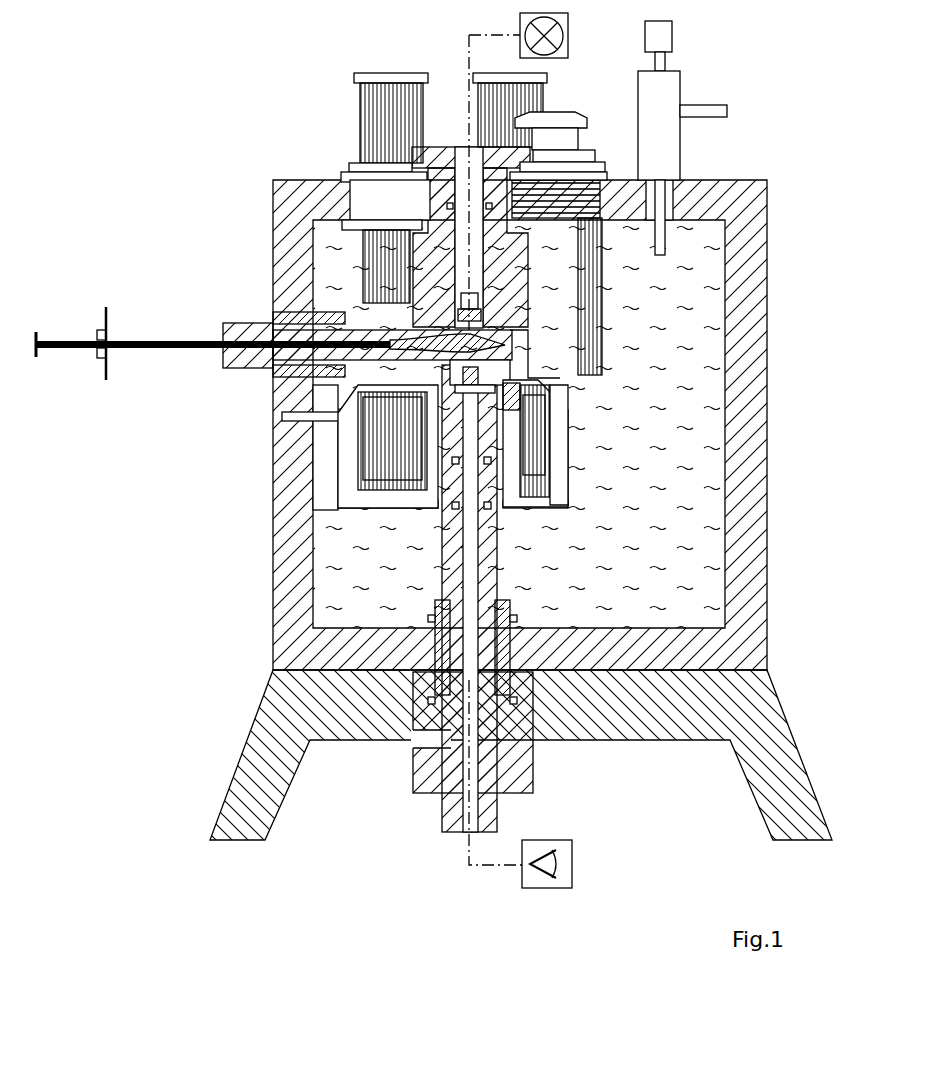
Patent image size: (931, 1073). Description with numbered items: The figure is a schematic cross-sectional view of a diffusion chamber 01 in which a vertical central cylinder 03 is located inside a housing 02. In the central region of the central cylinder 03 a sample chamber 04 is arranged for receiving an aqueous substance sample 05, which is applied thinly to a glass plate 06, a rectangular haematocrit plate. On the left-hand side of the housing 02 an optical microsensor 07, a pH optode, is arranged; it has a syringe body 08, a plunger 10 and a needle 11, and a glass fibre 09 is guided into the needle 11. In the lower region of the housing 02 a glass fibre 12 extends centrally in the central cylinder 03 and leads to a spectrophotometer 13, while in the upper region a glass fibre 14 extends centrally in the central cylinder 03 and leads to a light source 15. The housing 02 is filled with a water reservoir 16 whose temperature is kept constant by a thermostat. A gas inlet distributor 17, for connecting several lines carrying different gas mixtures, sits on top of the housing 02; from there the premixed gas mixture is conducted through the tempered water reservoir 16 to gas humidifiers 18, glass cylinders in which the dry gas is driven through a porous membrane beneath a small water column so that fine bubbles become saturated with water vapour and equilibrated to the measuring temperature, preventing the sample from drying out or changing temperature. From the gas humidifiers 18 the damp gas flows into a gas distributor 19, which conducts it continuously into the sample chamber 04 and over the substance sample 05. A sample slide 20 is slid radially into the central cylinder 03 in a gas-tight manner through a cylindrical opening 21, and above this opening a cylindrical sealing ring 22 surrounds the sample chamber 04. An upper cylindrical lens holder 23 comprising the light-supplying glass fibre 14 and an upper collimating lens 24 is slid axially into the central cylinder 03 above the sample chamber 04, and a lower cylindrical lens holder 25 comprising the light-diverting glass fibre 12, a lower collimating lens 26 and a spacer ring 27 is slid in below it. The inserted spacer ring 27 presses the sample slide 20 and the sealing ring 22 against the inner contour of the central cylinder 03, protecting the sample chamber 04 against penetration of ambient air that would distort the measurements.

The diffusion chamber 01 is at (128, 82).
The housing 02 is at (742, 292).
The central cylinder 03 is at (450, 535).
The sample chamber 04 is at (435, 317).
The substance sample 05 is at (520, 345).
The glass plate 06 is at (512, 380).
The optical microsensor 07 is at (223, 405).
The syringe body 08 is at (215, 340).
The glass fibre 09 is at (440, 310).
The plunger 10 is at (70, 350).
The needle 11 is at (290, 415).
The glass fibre 12 is at (470, 860).
The spectrophotometer 13 is at (572, 860).
The glass fibre 14 is at (468, 50).
The light source 15 is at (570, 36).
The water reservoir 16 is at (568, 500).
The gas inlet distributor 17 is at (658, 110).
The gas humidifiers 18 is at (390, 455).
The gas distributor 19 is at (600, 275).
The sample slide 20 is at (235, 368).
The cylindrical opening 21 is at (355, 430).
The sealing ring 22 is at (497, 335).
The upper cylindrical lens holder 23 is at (412, 160).
The upper collimating lens 24 is at (475, 308).
The lower cylindrical lens holder 25 is at (440, 590).
The lower collimating lens 26 is at (515, 470).
The spacer ring 27 is at (547, 375).